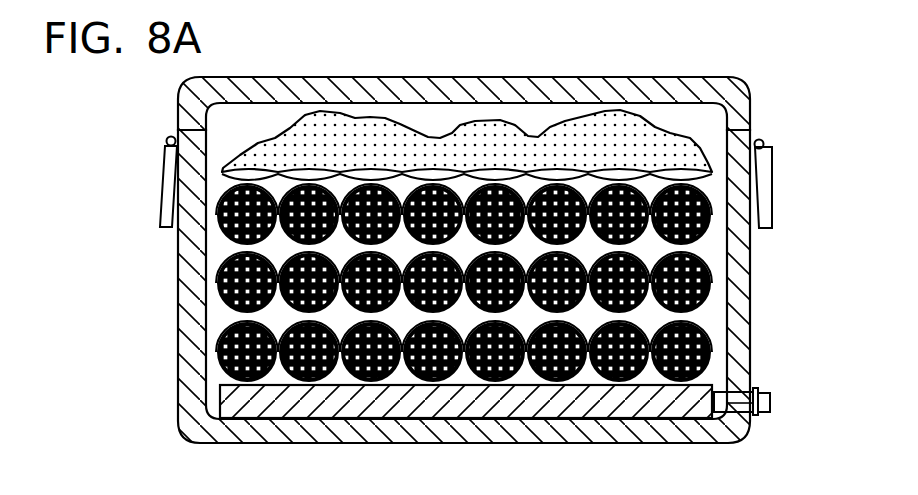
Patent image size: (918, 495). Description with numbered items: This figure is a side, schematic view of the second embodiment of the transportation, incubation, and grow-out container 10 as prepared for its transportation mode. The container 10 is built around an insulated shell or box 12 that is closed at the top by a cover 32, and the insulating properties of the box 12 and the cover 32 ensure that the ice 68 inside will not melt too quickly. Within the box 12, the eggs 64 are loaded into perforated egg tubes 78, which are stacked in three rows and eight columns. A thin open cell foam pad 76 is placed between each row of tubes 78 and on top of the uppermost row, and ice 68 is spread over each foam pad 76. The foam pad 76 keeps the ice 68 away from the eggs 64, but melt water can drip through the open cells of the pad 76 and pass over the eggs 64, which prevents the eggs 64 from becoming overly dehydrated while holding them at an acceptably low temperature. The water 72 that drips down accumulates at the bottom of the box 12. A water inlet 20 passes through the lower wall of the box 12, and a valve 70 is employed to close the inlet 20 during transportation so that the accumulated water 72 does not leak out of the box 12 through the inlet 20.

The container 10 is at (116, 148).
The insulated shell 12 is at (114, 336).
The water inlet 20 is at (738, 420).
The cover 32 is at (464, 54).
The eggs 64 is at (216, 300).
The ice 68 is at (560, 146).
The valve 70 is at (768, 392).
The water 72 is at (220, 386).
The open cell foam pad 76 is at (283, 186).
The egg tubes 78 is at (752, 265).